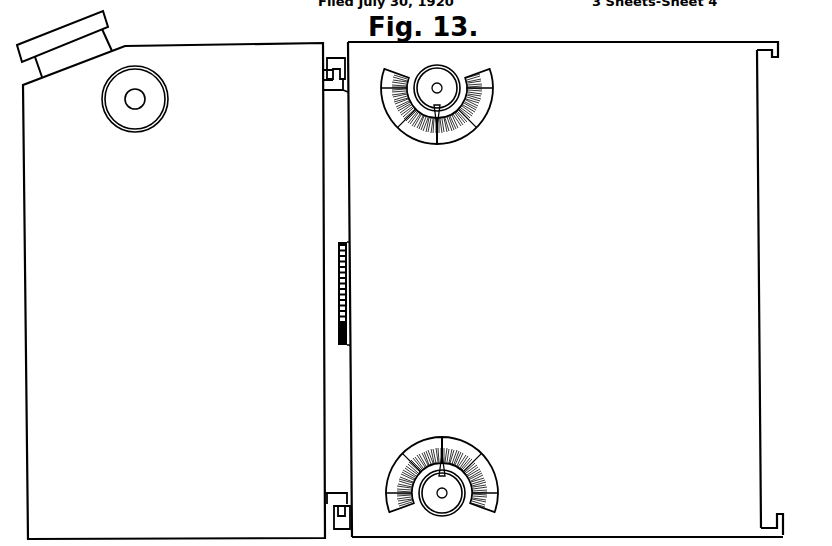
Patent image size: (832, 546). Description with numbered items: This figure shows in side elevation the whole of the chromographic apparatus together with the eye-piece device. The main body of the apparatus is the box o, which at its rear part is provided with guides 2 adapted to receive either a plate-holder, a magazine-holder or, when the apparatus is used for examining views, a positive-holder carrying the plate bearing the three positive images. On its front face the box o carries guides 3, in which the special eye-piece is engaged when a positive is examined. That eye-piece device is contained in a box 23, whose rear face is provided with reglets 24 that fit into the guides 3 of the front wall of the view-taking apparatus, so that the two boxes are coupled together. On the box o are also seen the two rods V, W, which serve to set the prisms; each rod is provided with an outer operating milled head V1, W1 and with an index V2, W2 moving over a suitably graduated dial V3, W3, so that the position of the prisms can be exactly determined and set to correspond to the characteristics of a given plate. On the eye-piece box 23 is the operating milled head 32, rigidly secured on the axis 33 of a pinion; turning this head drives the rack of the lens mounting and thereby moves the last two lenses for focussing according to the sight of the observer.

The guides 2 is at (779, 521).
The guides 3 is at (342, 520).
The box 23 is at (171, 275).
The reglets 24 is at (334, 497).
The operating milled head 32 is at (127, 128).
The axis 33 is at (135, 99).
The box o is at (565, 289).
The rod V is at (442, 83).
The outer operating milled head V1 is at (425, 77).
The index V2 is at (463, 123).
The graduated dial V3 is at (408, 133).
The rod W is at (446, 498).
The outer operating milled head W1 is at (438, 505).
The index W2 is at (445, 463).
The graduated dial W3 is at (412, 453).